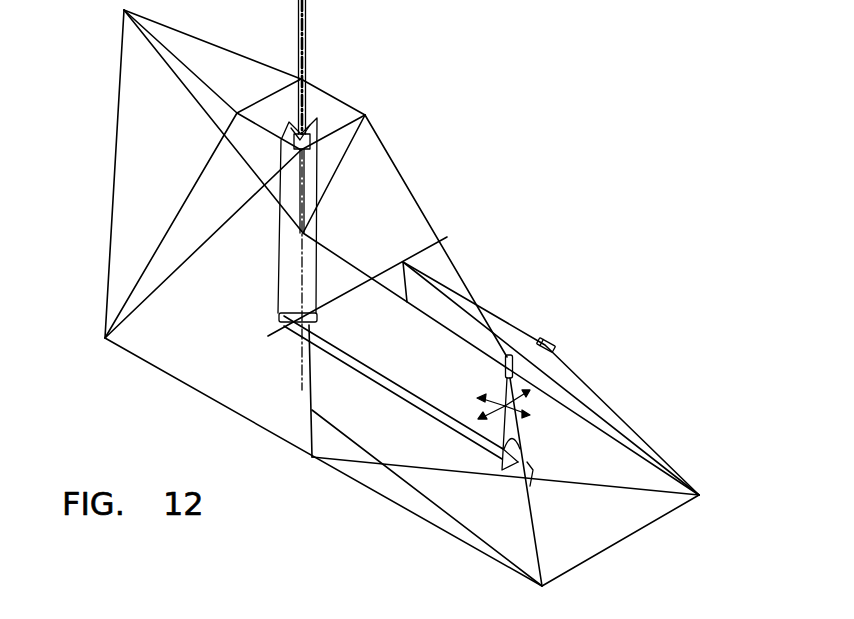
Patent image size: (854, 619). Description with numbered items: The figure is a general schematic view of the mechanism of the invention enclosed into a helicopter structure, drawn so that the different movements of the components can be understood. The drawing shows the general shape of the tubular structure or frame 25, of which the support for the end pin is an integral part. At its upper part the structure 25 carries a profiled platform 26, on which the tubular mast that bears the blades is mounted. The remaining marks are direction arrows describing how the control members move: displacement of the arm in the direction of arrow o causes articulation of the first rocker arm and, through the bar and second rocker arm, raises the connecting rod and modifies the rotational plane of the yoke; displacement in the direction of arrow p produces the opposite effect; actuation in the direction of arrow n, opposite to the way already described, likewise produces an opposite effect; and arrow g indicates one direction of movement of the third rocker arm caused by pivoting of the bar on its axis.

The tubular structure or frame 25 is at (415, 516).
The profiled platform 26 is at (317, 88).
The arrow p is at (488, 389).
The arrow n is at (478, 411).
The arrow o is at (533, 421).
The arrow g is at (537, 389).